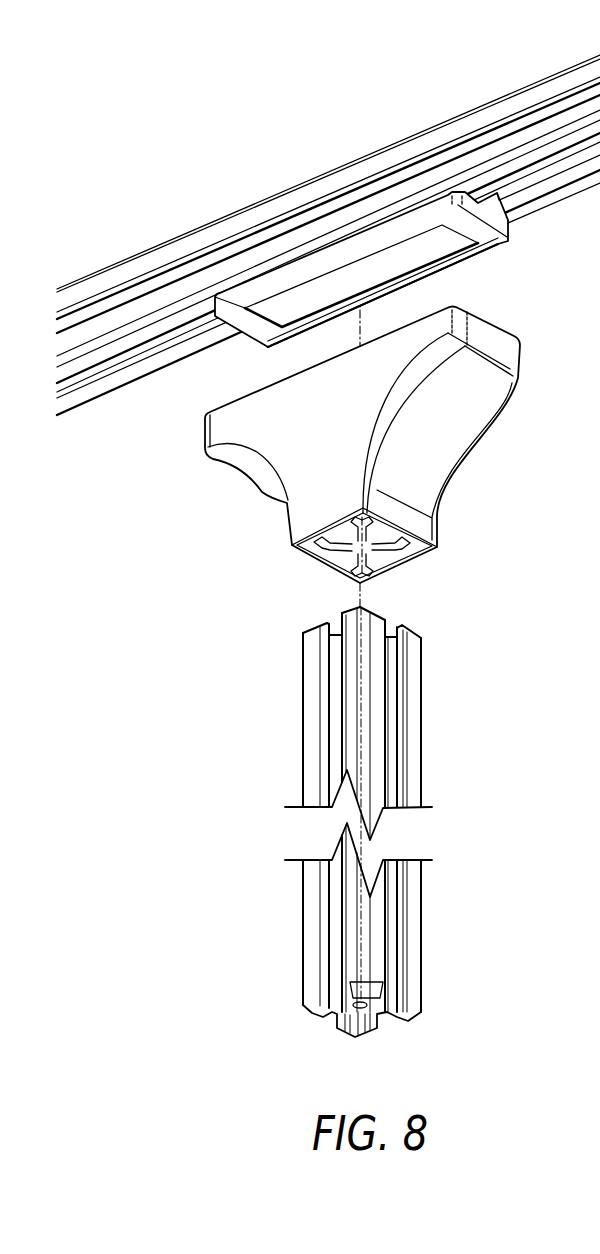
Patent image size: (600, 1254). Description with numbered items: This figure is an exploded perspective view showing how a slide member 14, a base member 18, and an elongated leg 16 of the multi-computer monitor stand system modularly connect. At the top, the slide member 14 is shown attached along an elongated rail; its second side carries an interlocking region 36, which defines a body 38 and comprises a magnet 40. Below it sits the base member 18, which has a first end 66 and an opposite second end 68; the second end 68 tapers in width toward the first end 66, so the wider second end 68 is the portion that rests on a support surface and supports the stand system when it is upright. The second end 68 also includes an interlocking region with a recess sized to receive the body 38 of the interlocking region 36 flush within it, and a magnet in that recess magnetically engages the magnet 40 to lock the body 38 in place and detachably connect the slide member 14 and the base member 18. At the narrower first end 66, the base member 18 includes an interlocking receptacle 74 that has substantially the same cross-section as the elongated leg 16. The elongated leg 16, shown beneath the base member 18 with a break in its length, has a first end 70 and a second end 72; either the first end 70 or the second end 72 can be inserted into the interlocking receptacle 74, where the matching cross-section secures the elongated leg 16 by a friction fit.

The slide member 14 is at (486, 278).
The elongated leg 16 is at (421, 722).
The base member 18 is at (484, 461).
The interlocking region 36 is at (418, 258).
The body 38 is at (259, 333).
The magnet 40 is at (312, 305).
The first end 66 is at (430, 550).
The second end 68 is at (512, 333).
The first end 70 is at (320, 627).
The second end 72 is at (312, 1012).
The interlocking receptacle 74 is at (313, 550).